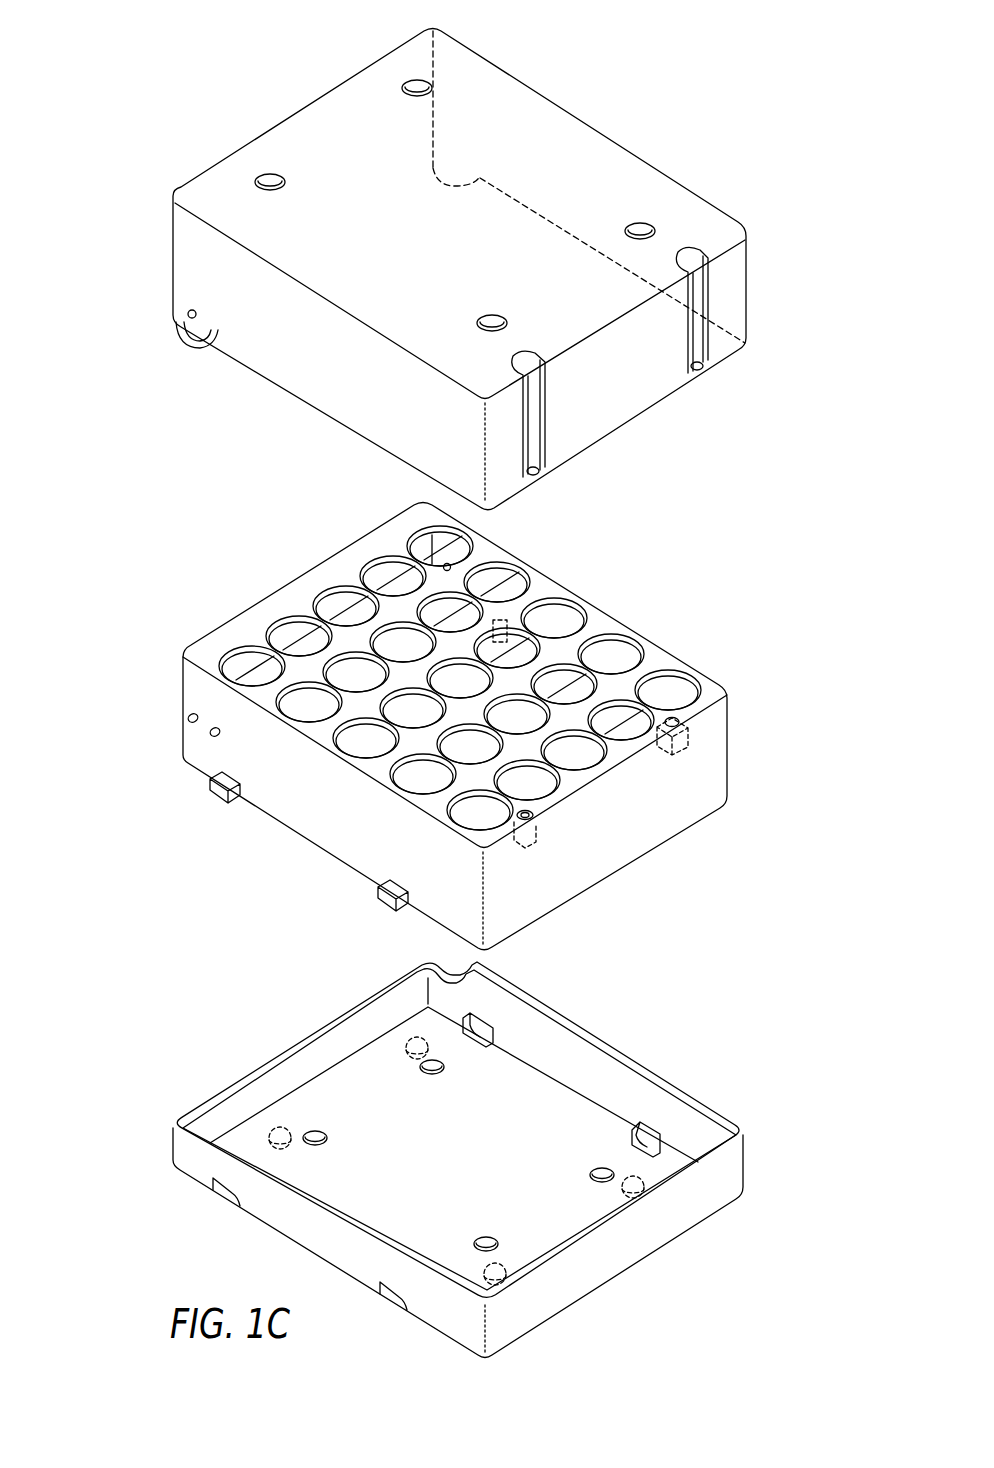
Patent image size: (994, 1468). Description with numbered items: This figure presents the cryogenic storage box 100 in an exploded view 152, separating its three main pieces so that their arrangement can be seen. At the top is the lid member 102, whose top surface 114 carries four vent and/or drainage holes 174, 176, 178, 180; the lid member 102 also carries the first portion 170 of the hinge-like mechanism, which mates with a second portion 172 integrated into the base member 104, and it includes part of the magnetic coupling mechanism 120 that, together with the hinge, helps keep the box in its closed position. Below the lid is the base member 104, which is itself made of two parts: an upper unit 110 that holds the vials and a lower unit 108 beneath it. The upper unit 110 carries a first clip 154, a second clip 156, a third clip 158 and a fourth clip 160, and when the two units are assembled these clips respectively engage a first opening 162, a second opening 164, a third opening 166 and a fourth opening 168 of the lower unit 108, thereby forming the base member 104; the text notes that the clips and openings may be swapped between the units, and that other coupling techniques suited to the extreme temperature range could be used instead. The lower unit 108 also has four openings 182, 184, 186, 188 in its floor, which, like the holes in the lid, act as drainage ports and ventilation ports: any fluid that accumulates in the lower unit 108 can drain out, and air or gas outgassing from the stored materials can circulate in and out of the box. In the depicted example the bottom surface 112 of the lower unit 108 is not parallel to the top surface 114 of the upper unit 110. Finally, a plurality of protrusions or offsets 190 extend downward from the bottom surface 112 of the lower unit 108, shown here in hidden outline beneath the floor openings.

The cryogenic storage box 100 is at (598, 52).
The lid member 102 is at (308, 406).
The base member 104 is at (779, 1156).
The lower unit 108 is at (622, 1050).
The upper unit 110 is at (598, 890).
The bottom surface 112 is at (182, 1187).
The top surface 114 is at (509, 56).
The magnetic coupling mechanism 120 is at (712, 378).
The exploded view 152 is at (115, 98).
The first clip 154 is at (217, 797).
The second clip 156 is at (392, 900).
The third clip 158 is at (500, 617).
The fourth clip 160 is at (664, 718).
The first opening 162 is at (223, 1200).
The second opening 164 is at (388, 1310).
The third opening 166 is at (503, 1038).
The fourth opening 168 is at (670, 1143).
The first portion 170 is at (430, 186).
The second portion 172 is at (448, 583).
The vent and/or drainage hole 174 is at (262, 162).
The vent and/or drainage hole 176 is at (492, 303).
The vent and/or drainage hole 178 is at (403, 68).
The vent and/or drainage hole 180 is at (642, 211).
The opening 182 is at (313, 1152).
The opening 184 is at (472, 1255).
The opening 186 is at (408, 1067).
The opening 188 is at (598, 1190).
The protrusions or offsets 190 is at (272, 1128).